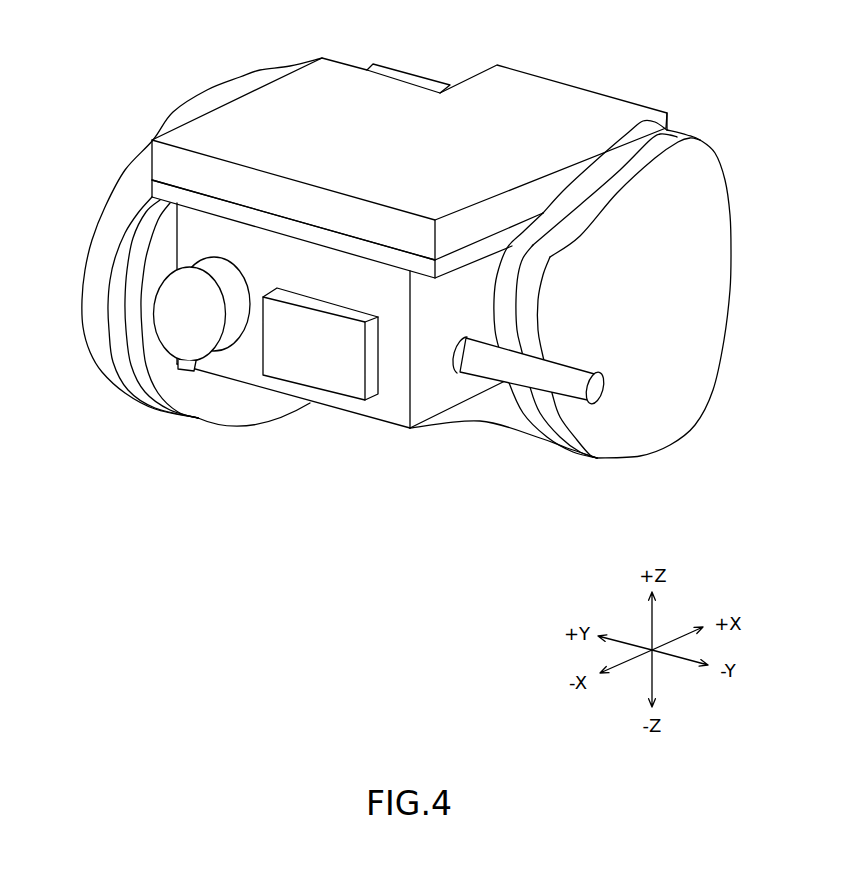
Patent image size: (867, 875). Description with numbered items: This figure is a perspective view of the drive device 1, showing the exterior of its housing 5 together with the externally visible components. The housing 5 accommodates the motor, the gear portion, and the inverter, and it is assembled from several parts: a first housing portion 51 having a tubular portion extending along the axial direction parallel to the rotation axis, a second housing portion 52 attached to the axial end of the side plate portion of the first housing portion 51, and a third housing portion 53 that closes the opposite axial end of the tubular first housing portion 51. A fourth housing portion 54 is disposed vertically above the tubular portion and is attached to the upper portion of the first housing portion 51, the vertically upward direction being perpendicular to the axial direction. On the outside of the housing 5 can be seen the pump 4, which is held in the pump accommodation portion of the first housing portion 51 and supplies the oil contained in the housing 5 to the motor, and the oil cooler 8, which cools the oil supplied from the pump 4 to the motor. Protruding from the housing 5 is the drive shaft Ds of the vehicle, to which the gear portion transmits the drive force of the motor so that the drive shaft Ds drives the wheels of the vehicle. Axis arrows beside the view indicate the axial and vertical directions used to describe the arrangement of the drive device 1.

The drive device 1 is at (410, 264).
The pump 4 is at (195, 343).
The housing 5 is at (430, 423).
The oil cooler 8 is at (340, 380).
The first housing portion 51 is at (393, 407).
The second housing portion 52 is at (108, 230).
The third housing portion 53 is at (717, 327).
The fourth housing portion 54 is at (415, 137).
The drive shaft Ds is at (548, 377).